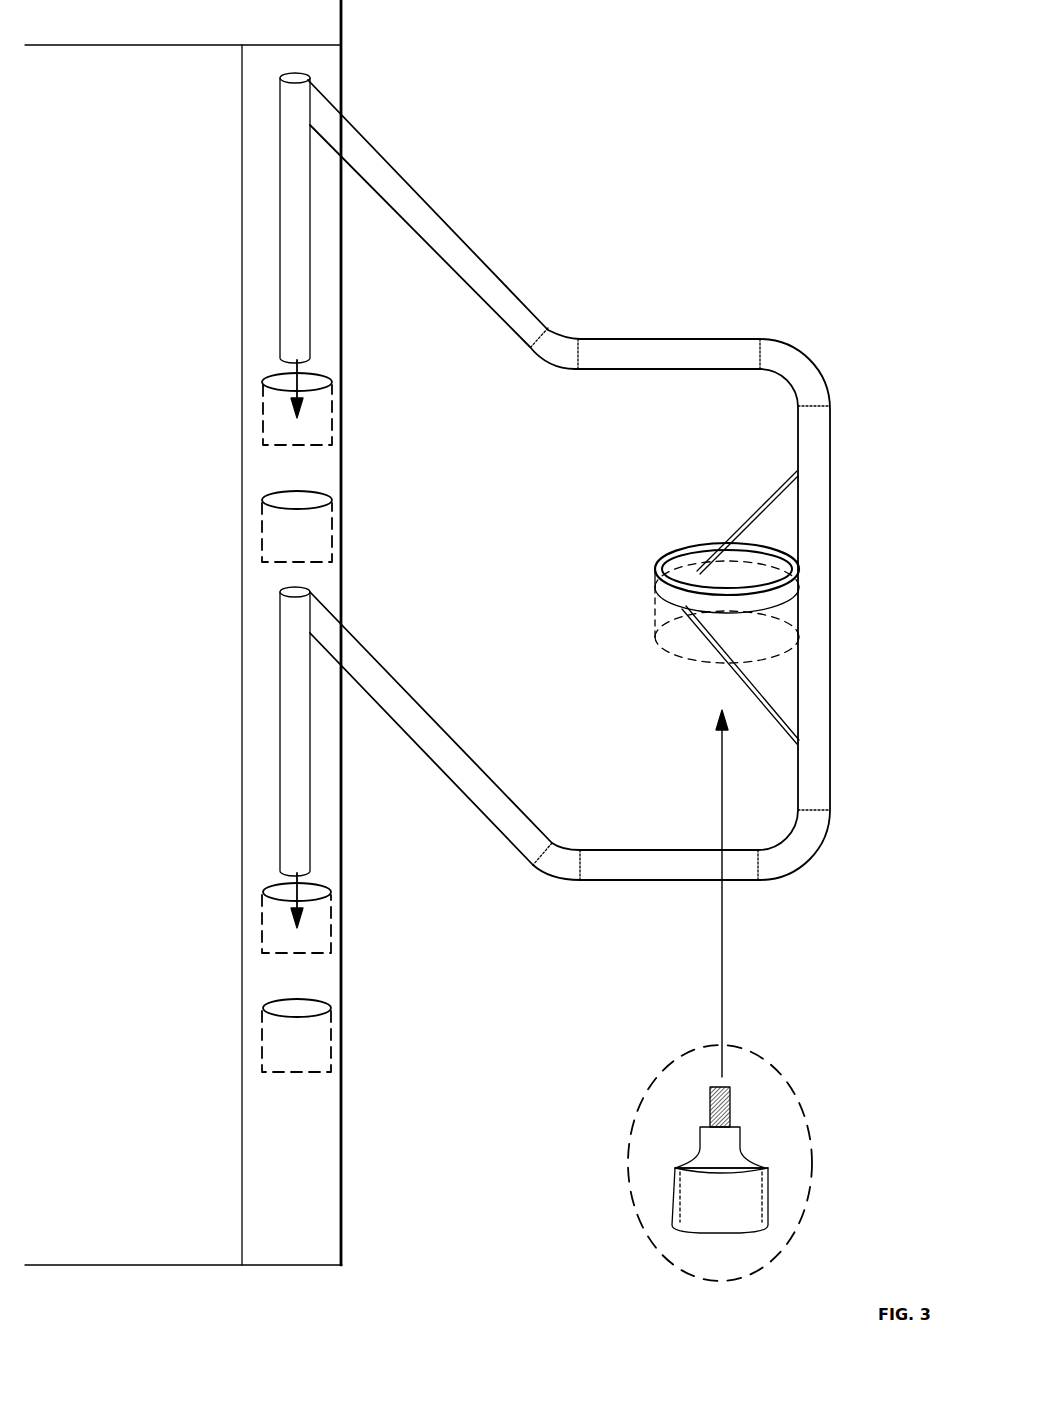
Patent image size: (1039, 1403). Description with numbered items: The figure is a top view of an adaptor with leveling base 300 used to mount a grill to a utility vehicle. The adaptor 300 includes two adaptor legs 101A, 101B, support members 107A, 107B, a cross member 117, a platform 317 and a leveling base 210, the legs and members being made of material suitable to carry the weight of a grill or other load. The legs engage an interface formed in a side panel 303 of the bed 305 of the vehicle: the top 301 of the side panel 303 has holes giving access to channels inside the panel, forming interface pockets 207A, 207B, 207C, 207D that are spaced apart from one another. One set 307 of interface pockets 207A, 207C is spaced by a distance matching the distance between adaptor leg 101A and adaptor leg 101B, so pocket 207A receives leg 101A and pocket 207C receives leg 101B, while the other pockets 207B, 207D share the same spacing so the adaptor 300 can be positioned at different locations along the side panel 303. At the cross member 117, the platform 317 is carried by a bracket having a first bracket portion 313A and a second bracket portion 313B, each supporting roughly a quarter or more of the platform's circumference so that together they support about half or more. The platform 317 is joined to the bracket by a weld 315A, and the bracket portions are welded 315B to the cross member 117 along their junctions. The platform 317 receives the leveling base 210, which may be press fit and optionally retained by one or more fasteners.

The adaptor with leveling base 300 is at (771, 98).
The top of the side panel 301 is at (305, 1162).
The side panel 303 is at (372, 83).
The bed 305 is at (121, 146).
The set of interface pockets 307 is at (261, 919).
The adaptor leg 101A is at (299, 800).
The adaptor leg 101B is at (295, 268).
The support member 107A is at (473, 770).
The support member 107B is at (490, 270).
The cross member 117 is at (817, 758).
The interface pocket 207A is at (318, 418).
The interface pocket 207B is at (318, 525).
The interface pocket 207C is at (327, 925).
The interface pocket 207D is at (312, 1035).
The leveling base 210 is at (638, 1215).
The first bracket portion 313A is at (773, 698).
The second bracket portion 313B is at (790, 490).
The weld 315A is at (687, 613).
The weld 315B is at (800, 518).
The platform 317 is at (665, 590).